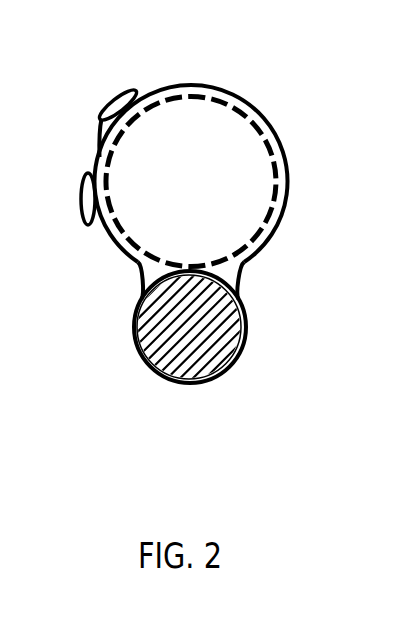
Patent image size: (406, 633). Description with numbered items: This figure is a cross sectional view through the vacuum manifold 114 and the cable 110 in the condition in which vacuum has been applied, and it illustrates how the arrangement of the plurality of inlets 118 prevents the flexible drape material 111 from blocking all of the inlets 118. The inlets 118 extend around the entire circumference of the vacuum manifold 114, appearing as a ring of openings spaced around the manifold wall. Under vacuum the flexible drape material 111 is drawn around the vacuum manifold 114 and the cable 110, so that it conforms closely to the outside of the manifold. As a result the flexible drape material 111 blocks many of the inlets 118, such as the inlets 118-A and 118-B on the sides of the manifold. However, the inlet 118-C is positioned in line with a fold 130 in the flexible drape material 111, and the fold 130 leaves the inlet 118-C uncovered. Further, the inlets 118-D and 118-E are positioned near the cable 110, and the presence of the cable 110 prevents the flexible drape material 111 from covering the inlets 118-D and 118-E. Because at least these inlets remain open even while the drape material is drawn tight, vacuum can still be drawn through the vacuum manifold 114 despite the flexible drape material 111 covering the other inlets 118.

The cable 110 is at (238, 342).
The flexible drape material 111 is at (283, 213).
The vacuum manifold 114 is at (242, 262).
The inlets 118 is at (215, 100).
The inlet 118-A is at (108, 158).
The inlet 118-B is at (275, 173).
The inlet 118-C is at (115, 138).
The inlet 118-D is at (156, 260).
The inlet 118-E is at (201, 262).
The fold 130 is at (105, 108).